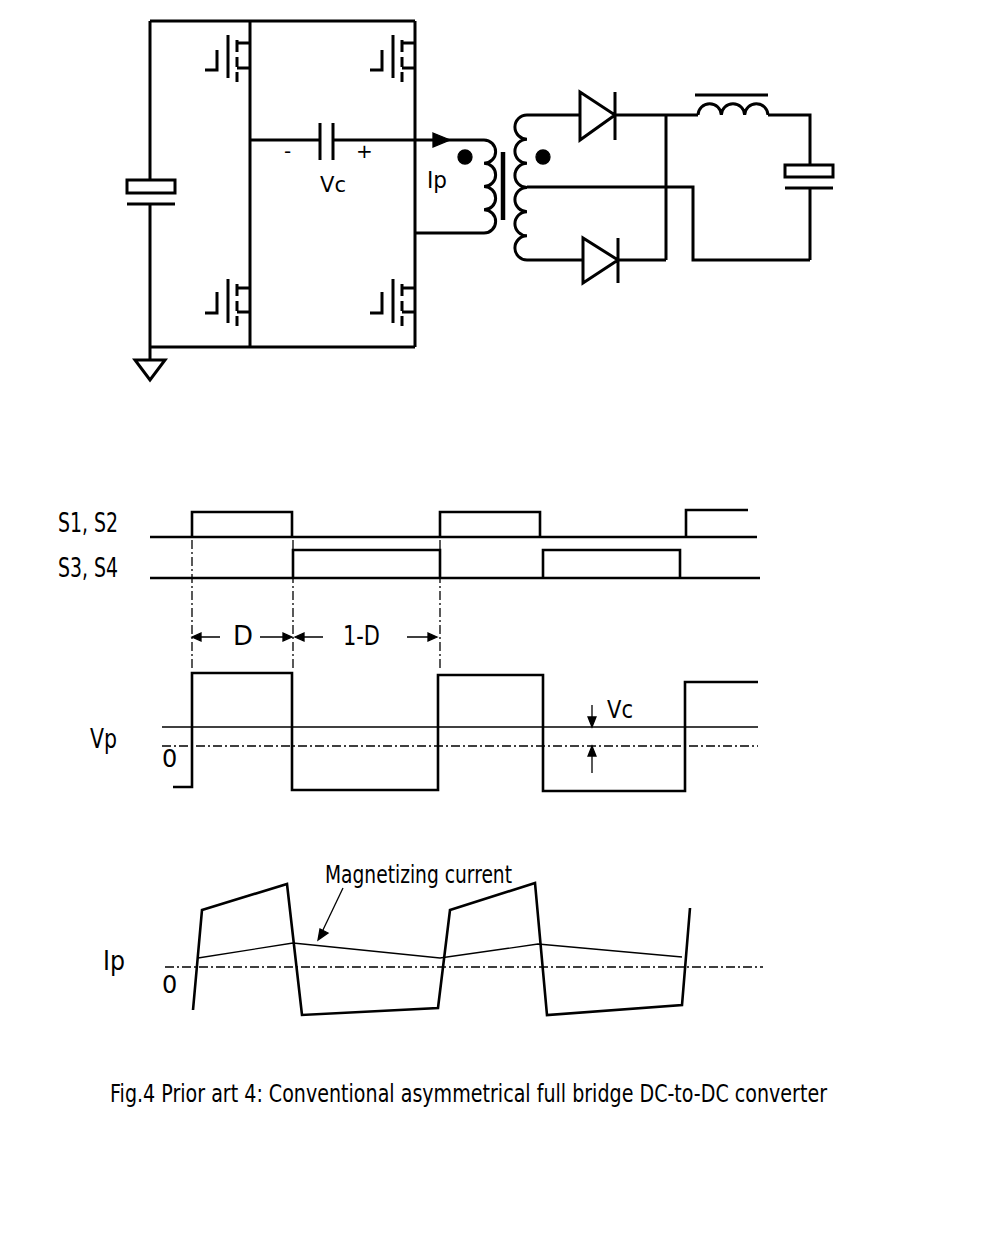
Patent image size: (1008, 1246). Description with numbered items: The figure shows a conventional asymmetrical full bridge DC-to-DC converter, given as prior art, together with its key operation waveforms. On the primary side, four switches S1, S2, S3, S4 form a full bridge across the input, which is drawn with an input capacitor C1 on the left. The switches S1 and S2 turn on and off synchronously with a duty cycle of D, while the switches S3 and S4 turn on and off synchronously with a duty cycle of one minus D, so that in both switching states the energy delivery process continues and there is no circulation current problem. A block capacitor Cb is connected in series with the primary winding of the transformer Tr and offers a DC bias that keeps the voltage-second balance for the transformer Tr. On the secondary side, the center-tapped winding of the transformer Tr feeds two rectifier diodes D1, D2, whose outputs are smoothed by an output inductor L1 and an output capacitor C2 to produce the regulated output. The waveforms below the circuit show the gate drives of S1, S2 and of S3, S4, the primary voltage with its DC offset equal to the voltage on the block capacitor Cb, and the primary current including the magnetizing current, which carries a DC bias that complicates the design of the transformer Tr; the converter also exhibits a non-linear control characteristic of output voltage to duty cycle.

The primary switch S1 is at (226, 82).
The primary switch S2 is at (388, 280).
The primary switch S3 is at (391, 82).
The primary switch S4 is at (226, 280).
The block capacitor Cb is at (329, 122).
The input capacitor C1 is at (127, 202).
The output capacitor C2 is at (832, 189).
The transformer Tr is at (487, 152).
The rectifier diode D1 is at (593, 97).
The rectifier diode D2 is at (595, 279).
The output inductor L1 is at (731, 85).